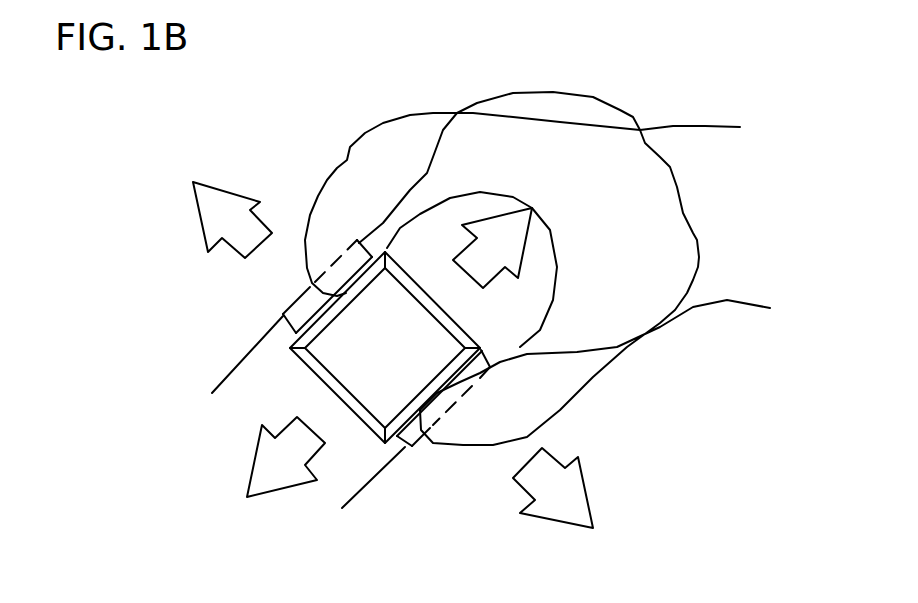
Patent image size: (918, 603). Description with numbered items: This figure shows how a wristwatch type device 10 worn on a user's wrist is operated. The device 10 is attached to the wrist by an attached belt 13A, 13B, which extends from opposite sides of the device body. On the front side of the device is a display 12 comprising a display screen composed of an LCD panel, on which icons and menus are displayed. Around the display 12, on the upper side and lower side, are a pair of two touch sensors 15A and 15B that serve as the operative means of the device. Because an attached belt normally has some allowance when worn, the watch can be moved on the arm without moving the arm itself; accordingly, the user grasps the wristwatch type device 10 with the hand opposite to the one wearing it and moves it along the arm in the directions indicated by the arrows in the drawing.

The wristwatch type device 10 is at (299, 412).
The display 12 is at (385, 370).
The attached belt 13A is at (284, 271).
The attached belt 13B is at (445, 458).
The touch sensor 15A is at (275, 294).
The touch sensor 15B is at (426, 443).